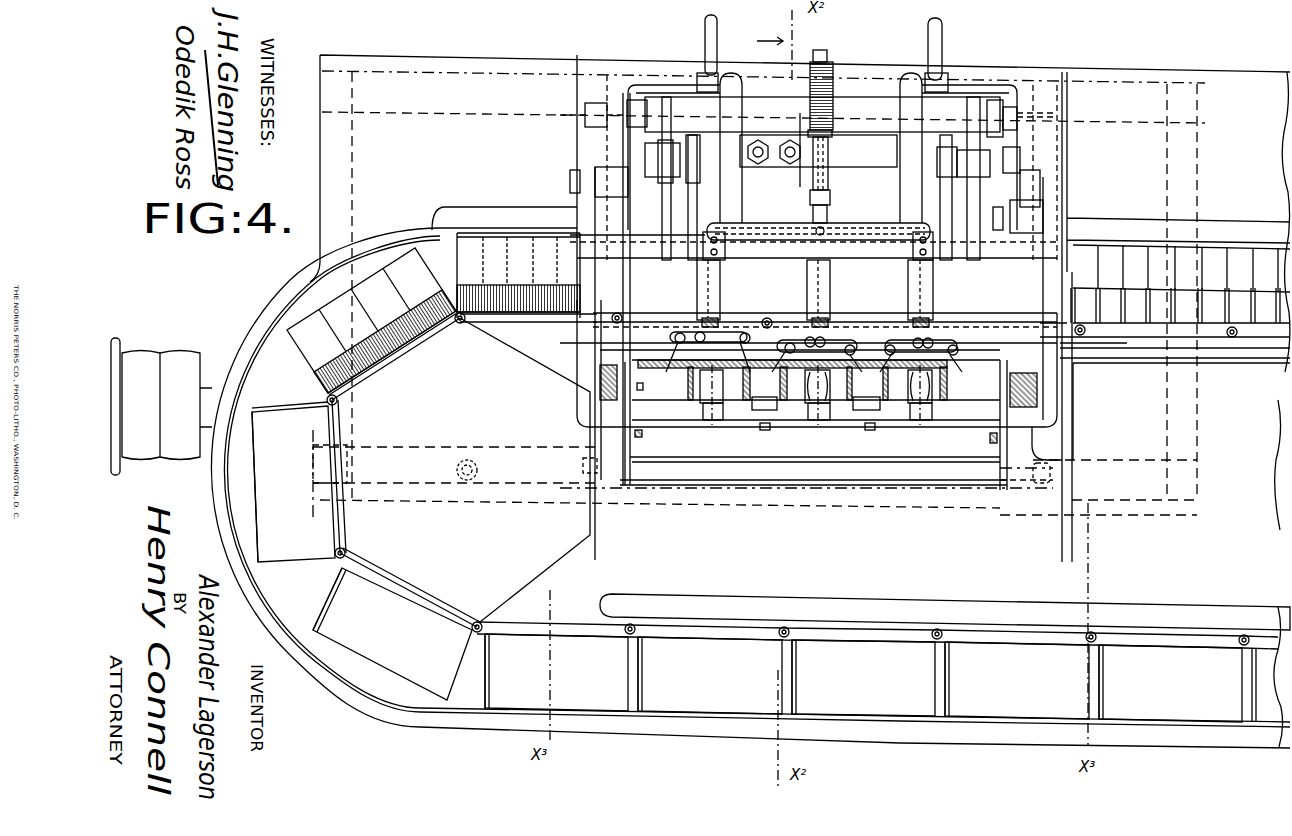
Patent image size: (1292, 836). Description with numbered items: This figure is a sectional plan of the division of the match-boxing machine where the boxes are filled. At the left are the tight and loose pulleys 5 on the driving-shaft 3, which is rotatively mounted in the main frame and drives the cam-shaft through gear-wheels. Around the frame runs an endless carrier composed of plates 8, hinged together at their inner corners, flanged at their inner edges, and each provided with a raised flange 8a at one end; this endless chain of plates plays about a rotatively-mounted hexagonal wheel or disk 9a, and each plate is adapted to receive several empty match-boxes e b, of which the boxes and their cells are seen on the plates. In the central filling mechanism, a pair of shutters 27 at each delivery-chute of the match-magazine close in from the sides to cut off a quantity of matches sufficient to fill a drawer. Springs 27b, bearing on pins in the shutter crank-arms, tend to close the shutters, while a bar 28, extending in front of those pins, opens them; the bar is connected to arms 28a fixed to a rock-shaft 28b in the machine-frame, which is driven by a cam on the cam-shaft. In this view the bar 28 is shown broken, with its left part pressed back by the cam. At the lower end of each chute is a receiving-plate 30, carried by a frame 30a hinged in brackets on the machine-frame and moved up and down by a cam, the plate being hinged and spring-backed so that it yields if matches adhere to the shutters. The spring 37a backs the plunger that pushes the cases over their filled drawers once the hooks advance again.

The driving-shaft 3 is at (206, 388).
The tight and loose pulleys 5 is at (180, 324).
The plates 8 is at (380, 270).
The raised flange 8a is at (1107, 674).
The hexagonal wheel or disk 9a is at (524, 470).
The shutters 27 is at (700, 375).
The springs 27b is at (960, 325).
The bar 28 is at (663, 369).
The arms 28a is at (635, 441).
The rock-shaft 28b is at (742, 473).
The receiving-plate 30 is at (710, 421).
The frame 30a is at (960, 437).
The spring 37a is at (833, 113).
The mold cell f is at (438, 294).
The mold partition b is at (441, 292).